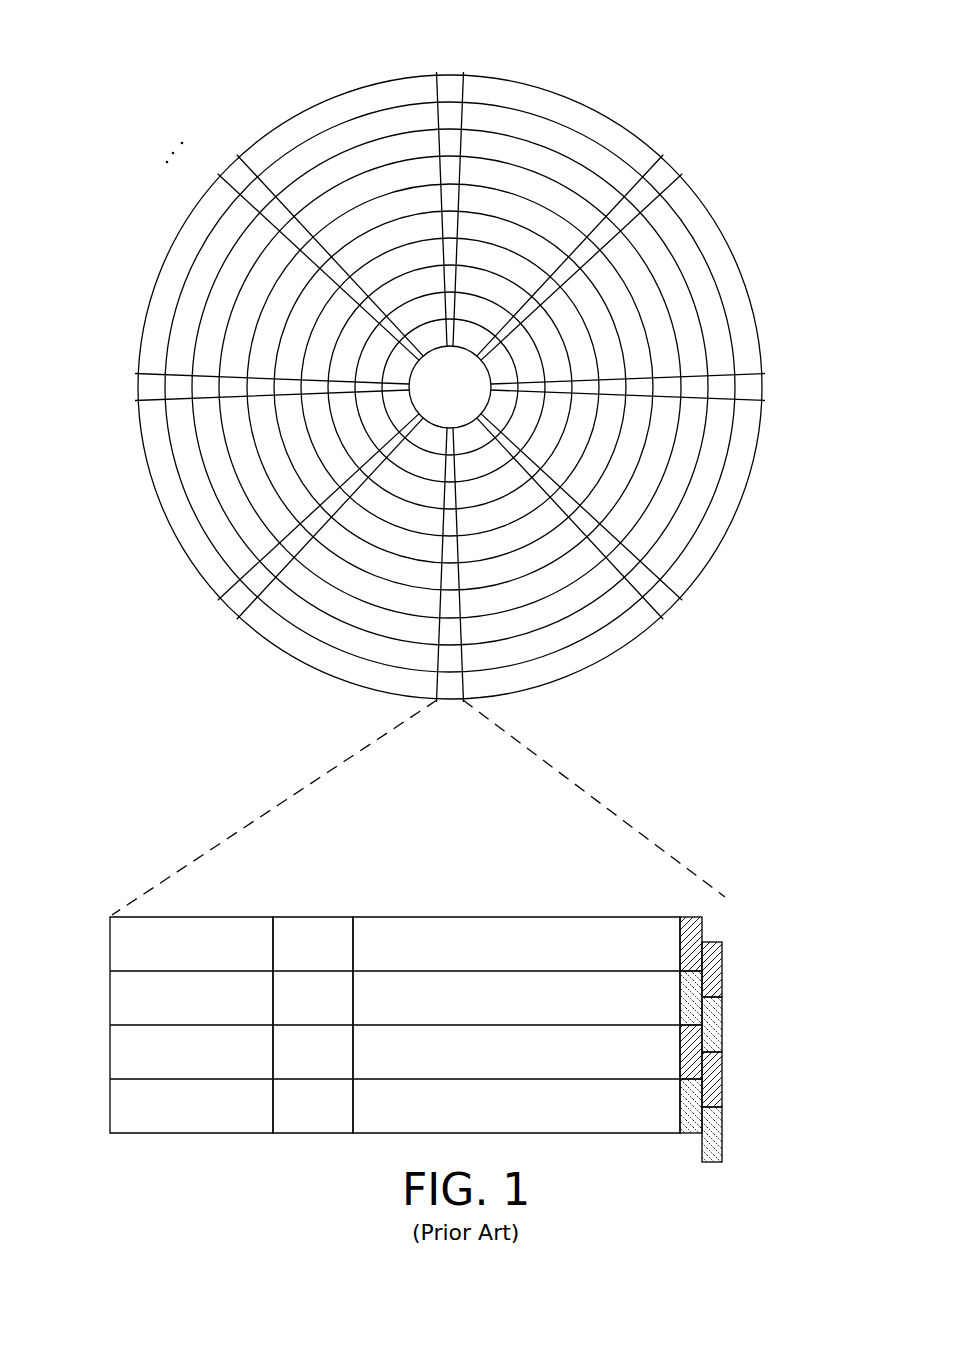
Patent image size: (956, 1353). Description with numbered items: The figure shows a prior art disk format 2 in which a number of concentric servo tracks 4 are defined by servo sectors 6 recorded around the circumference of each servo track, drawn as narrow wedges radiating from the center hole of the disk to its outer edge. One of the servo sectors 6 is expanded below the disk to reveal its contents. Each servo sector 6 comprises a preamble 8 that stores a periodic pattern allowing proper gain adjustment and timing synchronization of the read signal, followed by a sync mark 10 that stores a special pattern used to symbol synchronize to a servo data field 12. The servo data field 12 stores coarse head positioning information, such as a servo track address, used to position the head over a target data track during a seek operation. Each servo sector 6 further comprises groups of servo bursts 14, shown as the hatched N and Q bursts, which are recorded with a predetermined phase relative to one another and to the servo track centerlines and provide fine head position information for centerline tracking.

The disk format 2 is at (221, 81).
The servo tracks 4 is at (556, 136).
The servo sectors 6 is at (450, 395).
The preamble 8 is at (198, 917).
The sync mark 10 is at (316, 917).
The servo data field 12 is at (505, 917).
The servo bursts 14 is at (720, 913).